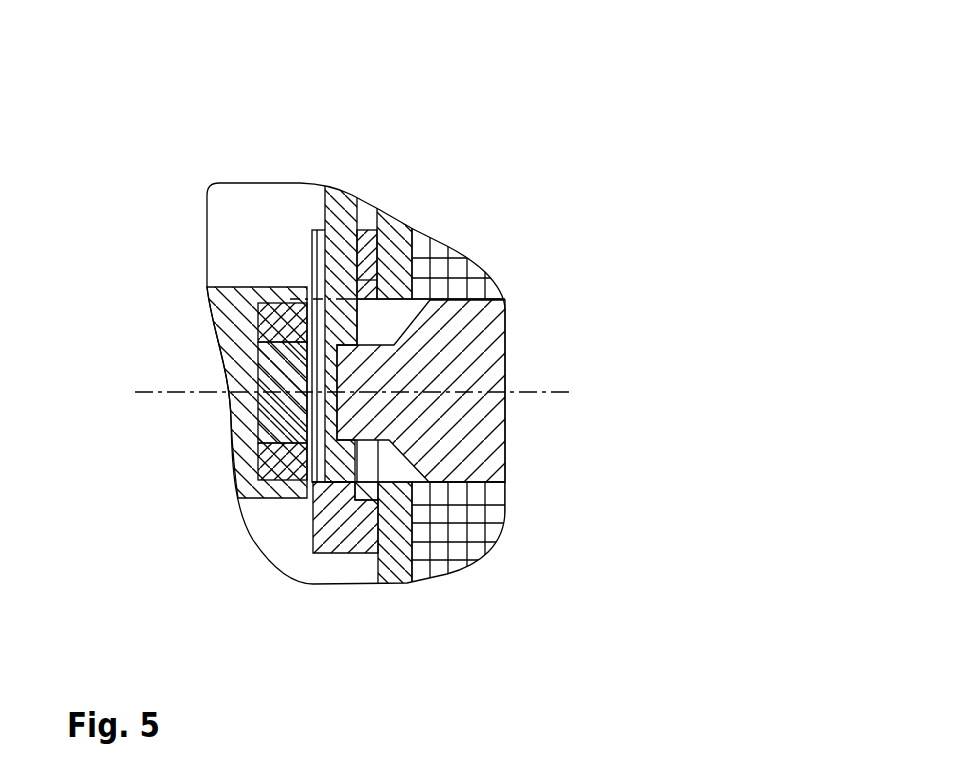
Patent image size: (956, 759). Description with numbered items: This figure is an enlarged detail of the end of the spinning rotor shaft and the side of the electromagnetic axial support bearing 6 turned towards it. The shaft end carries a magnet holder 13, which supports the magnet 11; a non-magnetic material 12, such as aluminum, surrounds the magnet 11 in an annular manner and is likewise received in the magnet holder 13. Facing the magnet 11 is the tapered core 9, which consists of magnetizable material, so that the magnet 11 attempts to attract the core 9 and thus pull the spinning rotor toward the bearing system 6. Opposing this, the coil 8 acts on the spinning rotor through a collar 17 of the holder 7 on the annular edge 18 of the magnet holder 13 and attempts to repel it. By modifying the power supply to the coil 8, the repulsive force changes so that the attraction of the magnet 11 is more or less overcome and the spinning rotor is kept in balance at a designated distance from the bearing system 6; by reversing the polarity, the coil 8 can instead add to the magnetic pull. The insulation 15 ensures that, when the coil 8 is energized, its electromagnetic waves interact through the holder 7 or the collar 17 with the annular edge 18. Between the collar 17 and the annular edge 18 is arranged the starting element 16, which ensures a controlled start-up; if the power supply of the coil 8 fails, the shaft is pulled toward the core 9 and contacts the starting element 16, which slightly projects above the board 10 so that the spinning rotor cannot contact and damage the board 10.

The axial support bearing 6 is at (531, 567).
The holder 7 is at (388, 238).
The coil 8 is at (453, 530).
The tapered core 9 is at (470, 418).
The board 10 is at (337, 208).
The magnet 11 is at (273, 366).
The non-magnetic material 12 is at (273, 467).
The magnet holder 13 is at (237, 323).
The insulation 15 is at (480, 300).
The starting element 16 is at (323, 525).
The collar 17 is at (364, 498).
The annular edge 18 is at (292, 293).